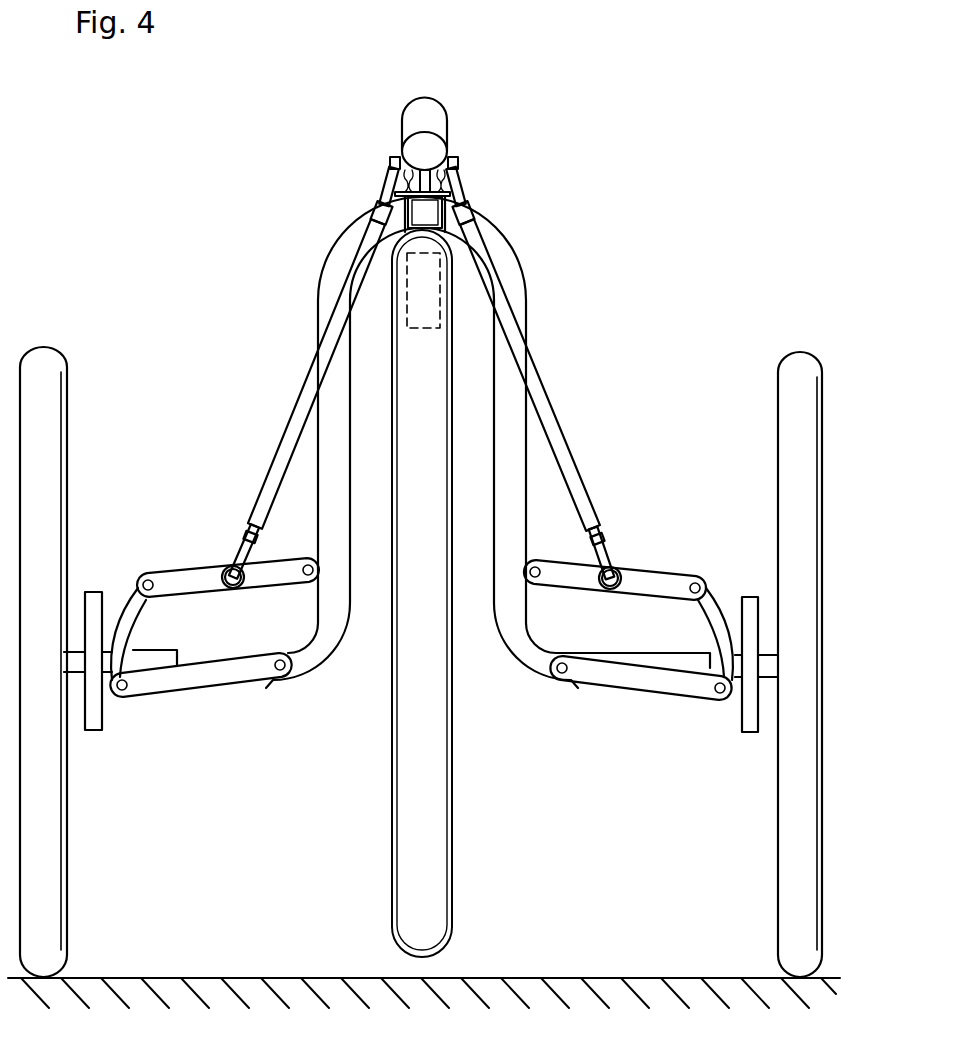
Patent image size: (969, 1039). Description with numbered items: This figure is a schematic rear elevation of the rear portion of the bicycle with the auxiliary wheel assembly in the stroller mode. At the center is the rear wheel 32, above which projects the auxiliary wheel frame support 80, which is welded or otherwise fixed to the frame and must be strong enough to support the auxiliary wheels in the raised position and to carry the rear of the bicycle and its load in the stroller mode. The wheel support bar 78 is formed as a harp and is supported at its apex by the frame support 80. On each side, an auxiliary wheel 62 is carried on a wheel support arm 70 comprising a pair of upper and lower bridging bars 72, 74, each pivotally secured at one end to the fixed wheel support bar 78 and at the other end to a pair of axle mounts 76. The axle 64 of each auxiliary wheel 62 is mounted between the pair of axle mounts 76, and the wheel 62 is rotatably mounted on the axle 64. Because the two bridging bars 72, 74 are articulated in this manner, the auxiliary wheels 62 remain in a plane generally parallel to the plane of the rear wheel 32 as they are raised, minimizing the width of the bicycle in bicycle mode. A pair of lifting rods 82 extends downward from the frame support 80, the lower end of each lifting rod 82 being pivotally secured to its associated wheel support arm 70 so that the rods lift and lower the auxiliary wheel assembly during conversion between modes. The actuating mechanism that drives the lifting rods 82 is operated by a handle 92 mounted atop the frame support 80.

The rear wheel 32 is at (437, 813).
The auxiliary wheel 62 is at (67, 457).
The axle 64 is at (770, 668).
The wheel support arm 70 is at (642, 613).
The upper bridging bar 72 is at (633, 573).
The lower bridging bar 74 is at (635, 680).
The axle mount 76 is at (717, 607).
The wheel support bar 78 is at (513, 410).
The auxiliary wheel frame support 80 is at (453, 197).
The lifting rod 82 is at (490, 270).
The handle 92 is at (442, 122).